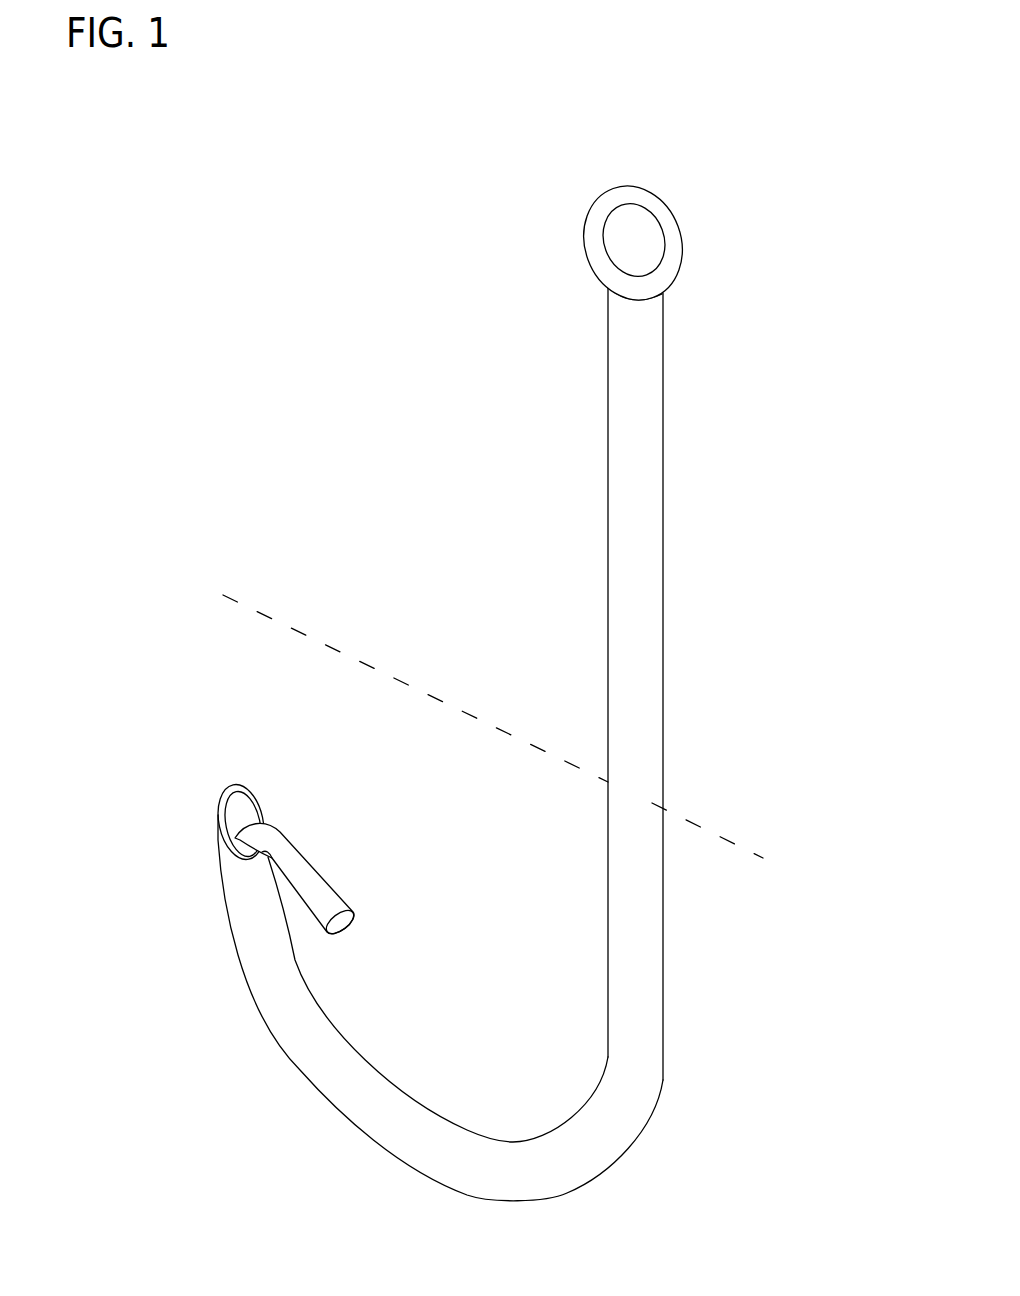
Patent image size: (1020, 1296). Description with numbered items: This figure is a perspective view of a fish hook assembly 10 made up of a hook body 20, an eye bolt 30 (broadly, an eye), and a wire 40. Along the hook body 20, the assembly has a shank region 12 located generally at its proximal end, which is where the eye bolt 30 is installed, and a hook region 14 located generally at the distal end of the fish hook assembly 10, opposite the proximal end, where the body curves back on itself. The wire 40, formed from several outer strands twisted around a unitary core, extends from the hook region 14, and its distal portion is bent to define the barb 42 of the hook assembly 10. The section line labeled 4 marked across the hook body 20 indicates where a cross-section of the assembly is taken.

The fish hook assembly 10 is at (203, 334).
The shank region 12 is at (543, 290).
The hook region 14 is at (176, 807).
The hook body 20 is at (625, 612).
The eye bolt 30 is at (677, 256).
The wire 40 is at (275, 833).
The barb 42 is at (343, 920).
The section line 4- 4 is at (223, 595).